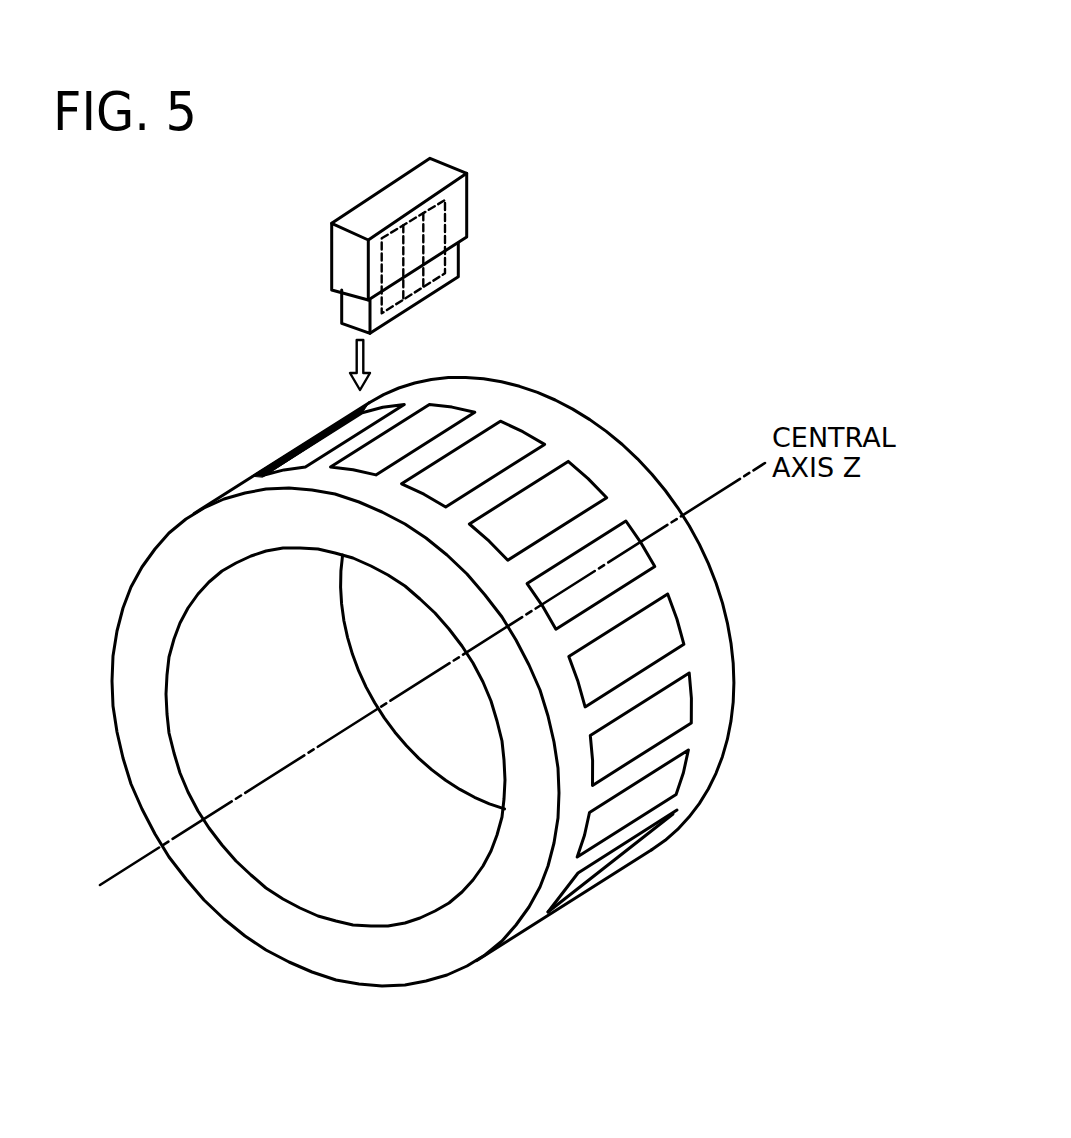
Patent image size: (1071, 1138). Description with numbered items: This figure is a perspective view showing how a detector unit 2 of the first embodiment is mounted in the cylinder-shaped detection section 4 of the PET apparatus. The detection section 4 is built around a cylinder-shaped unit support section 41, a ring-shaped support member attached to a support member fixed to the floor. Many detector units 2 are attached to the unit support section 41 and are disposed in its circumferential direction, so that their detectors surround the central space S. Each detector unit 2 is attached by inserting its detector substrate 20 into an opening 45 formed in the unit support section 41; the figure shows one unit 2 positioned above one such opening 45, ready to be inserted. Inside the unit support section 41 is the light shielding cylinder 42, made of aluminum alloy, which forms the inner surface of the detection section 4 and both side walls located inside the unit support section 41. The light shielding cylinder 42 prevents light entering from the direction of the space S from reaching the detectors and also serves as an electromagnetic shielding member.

The detection section 4 is at (450, 201).
The detector unit 2 is at (467, 183).
The light receiving element 20 is at (445, 228).
The unit support section 41 is at (546, 397).
The light shielding cylinder 42 is at (322, 880).
The opening 45 is at (620, 570).
The space S is at (366, 633).